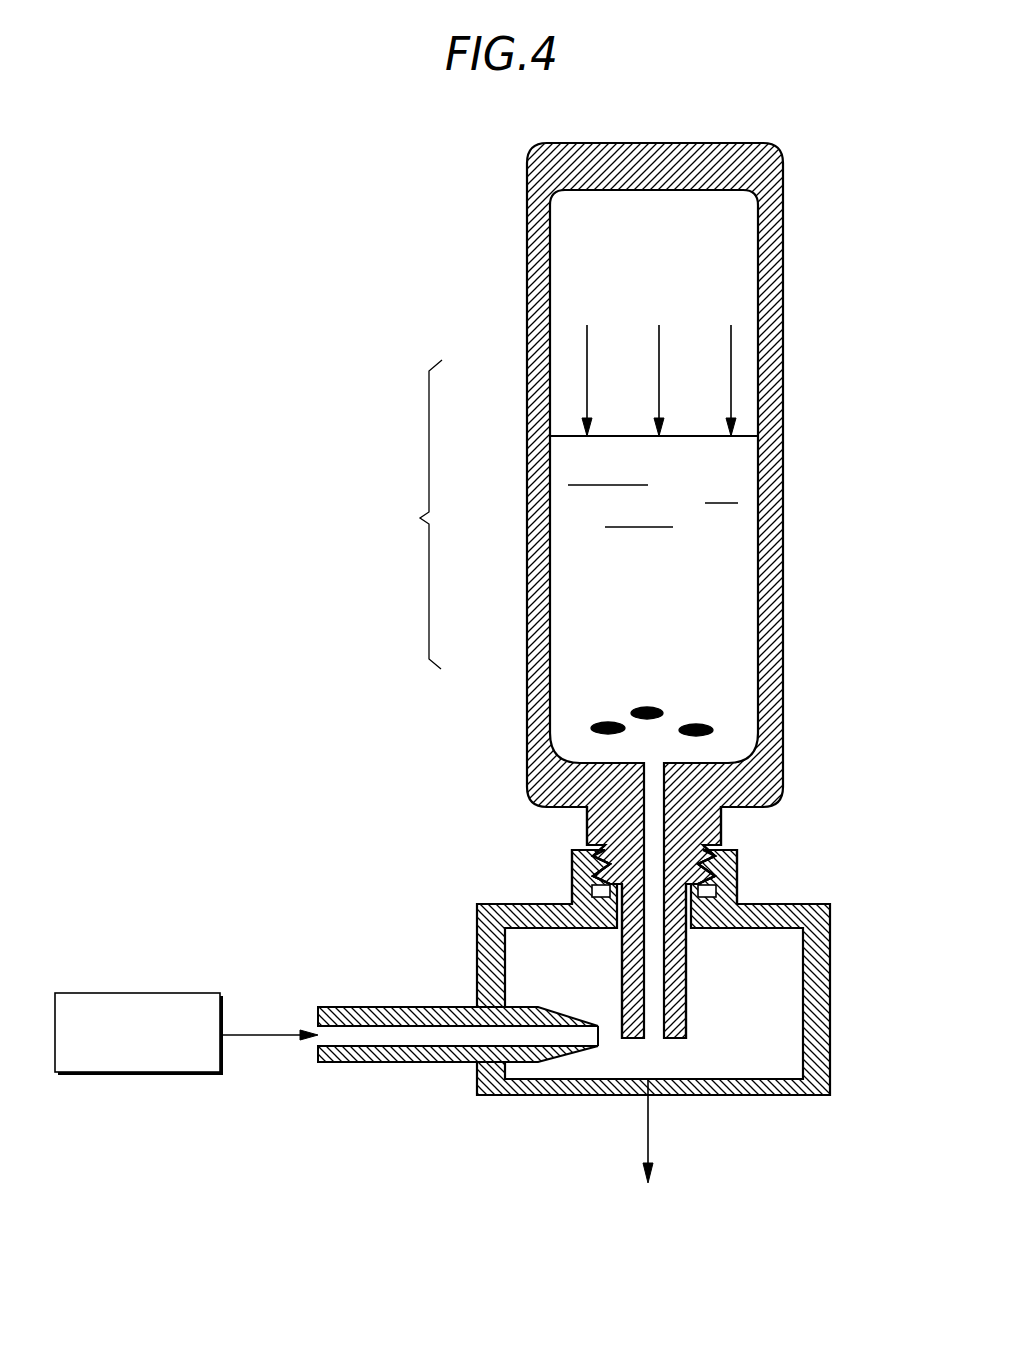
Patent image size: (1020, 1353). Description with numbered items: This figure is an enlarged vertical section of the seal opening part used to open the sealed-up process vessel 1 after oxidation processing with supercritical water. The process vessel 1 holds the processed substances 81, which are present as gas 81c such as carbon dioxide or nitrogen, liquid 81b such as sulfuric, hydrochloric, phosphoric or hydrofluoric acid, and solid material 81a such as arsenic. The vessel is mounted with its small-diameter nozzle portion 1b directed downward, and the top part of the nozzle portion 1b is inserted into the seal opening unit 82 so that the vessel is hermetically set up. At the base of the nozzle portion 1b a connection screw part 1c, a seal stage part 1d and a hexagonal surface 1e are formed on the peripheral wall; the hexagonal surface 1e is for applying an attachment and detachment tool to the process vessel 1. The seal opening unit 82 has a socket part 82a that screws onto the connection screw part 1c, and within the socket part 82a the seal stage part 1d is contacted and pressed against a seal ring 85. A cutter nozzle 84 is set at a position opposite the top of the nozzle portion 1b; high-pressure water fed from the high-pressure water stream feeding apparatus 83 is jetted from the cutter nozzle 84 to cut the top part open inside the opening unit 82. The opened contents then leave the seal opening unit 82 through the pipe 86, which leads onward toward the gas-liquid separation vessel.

The process vessel 1 is at (598, 152).
The nozzle portion 1b is at (687, 984).
The connection screw part 1c is at (572, 862).
The seal stage part 1d is at (722, 831).
The hexagonal surface 1e is at (587, 826).
The processed substances 81 is at (414, 514).
The solid material 81a is at (640, 708).
The liquid 81b is at (608, 586).
The gas 81c is at (568, 413).
The seal opening unit 82 is at (830, 1000).
The socket part 82a is at (737, 868).
The high-pressure water stream feeding apparatus 83 is at (177, 993).
The cutter nozzle 84 is at (395, 1007).
The seal ring 85 is at (737, 900).
The pipe 86 is at (648, 1134).